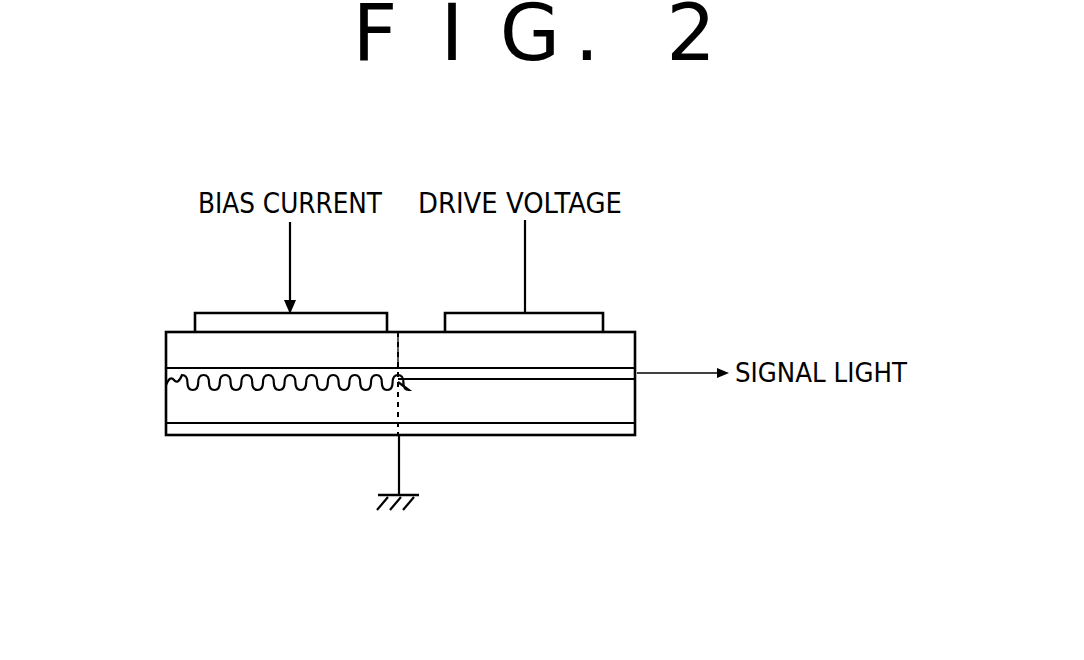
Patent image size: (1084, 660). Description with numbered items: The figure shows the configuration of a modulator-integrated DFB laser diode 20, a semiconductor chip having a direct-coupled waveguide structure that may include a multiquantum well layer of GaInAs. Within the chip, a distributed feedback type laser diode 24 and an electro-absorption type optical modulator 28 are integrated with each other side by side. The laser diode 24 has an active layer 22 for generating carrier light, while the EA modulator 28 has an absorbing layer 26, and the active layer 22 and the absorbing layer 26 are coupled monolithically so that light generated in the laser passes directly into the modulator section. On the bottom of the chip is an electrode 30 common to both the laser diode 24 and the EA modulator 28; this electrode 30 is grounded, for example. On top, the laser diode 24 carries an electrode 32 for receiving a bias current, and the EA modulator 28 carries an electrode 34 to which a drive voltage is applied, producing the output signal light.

The modulator-integrated DFB laser diode 20 is at (690, 123).
The active layer 22 is at (168, 385).
The laser diode 24 is at (136, 357).
The absorbing layer 26 is at (618, 376).
The EA modulator 28 is at (656, 343).
The electrode 30 is at (255, 437).
The electrode 32 is at (231, 313).
The electrode 34 is at (490, 313).